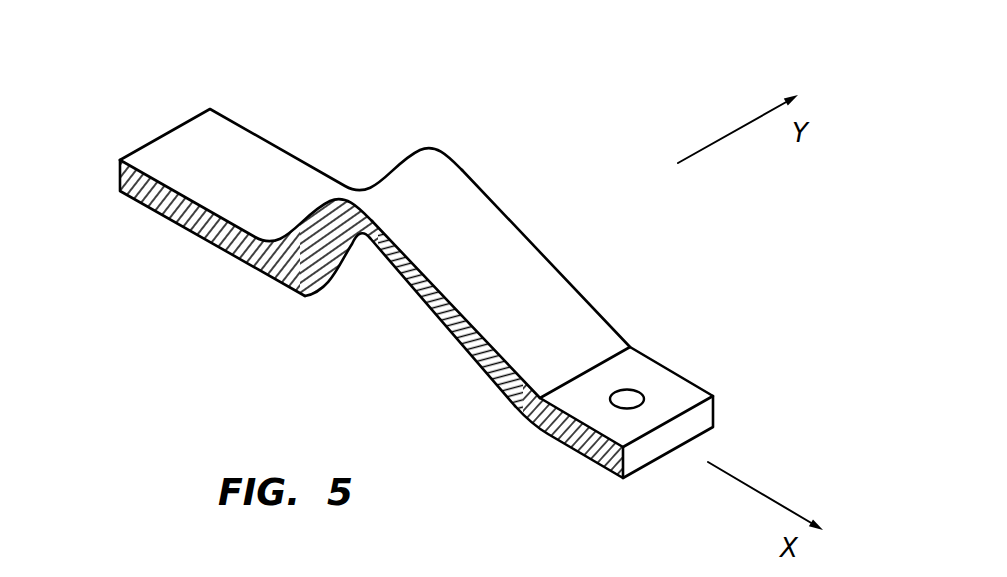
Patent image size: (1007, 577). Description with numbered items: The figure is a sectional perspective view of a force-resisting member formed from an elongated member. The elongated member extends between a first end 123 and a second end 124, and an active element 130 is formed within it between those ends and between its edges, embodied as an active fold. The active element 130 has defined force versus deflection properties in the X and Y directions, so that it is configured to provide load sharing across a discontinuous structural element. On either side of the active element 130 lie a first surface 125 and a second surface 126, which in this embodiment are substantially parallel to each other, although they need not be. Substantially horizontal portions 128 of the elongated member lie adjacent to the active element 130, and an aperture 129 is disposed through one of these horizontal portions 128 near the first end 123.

The first end 123 is at (702, 434).
The second end 124 is at (147, 141).
The first surface 125 is at (240, 150).
The second surface 126 is at (277, 297).
The substantially horizontal portions 128 is at (292, 298).
The apertures 129 is at (643, 392).
The active element 130 is at (692, 247).